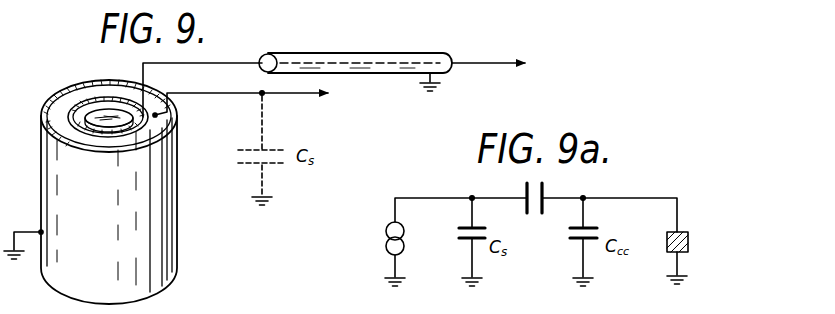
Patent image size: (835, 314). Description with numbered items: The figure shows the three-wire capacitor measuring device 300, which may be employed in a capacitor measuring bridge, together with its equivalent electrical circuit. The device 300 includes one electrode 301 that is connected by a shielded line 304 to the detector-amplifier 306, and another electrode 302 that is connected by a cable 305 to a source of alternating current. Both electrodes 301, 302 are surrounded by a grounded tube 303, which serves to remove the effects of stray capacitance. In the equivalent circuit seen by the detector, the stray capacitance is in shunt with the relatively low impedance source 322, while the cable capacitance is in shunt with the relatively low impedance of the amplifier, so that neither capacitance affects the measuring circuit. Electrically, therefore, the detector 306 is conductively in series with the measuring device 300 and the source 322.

In FIG. 9, the three-wire capacitor measuring device 300 is at (182, 218).
In FIG. 9A, the three-wire capacitor measuring device 300 is at (546, 190).
In FIG. 9, the electrode 301 is at (130, 118).
In FIG. 9, the electrode 302 is at (158, 138).
In FIG. 9, the grounded tube 303 is at (162, 262).
In FIG. 9, the shielded line 304 is at (440, 54).
In FIG. 9, the cable 305 is at (304, 96).
In FIG. 9A, the detector-amplifier 306 is at (690, 242).
In FIG. 9A, the source 322 is at (402, 236).